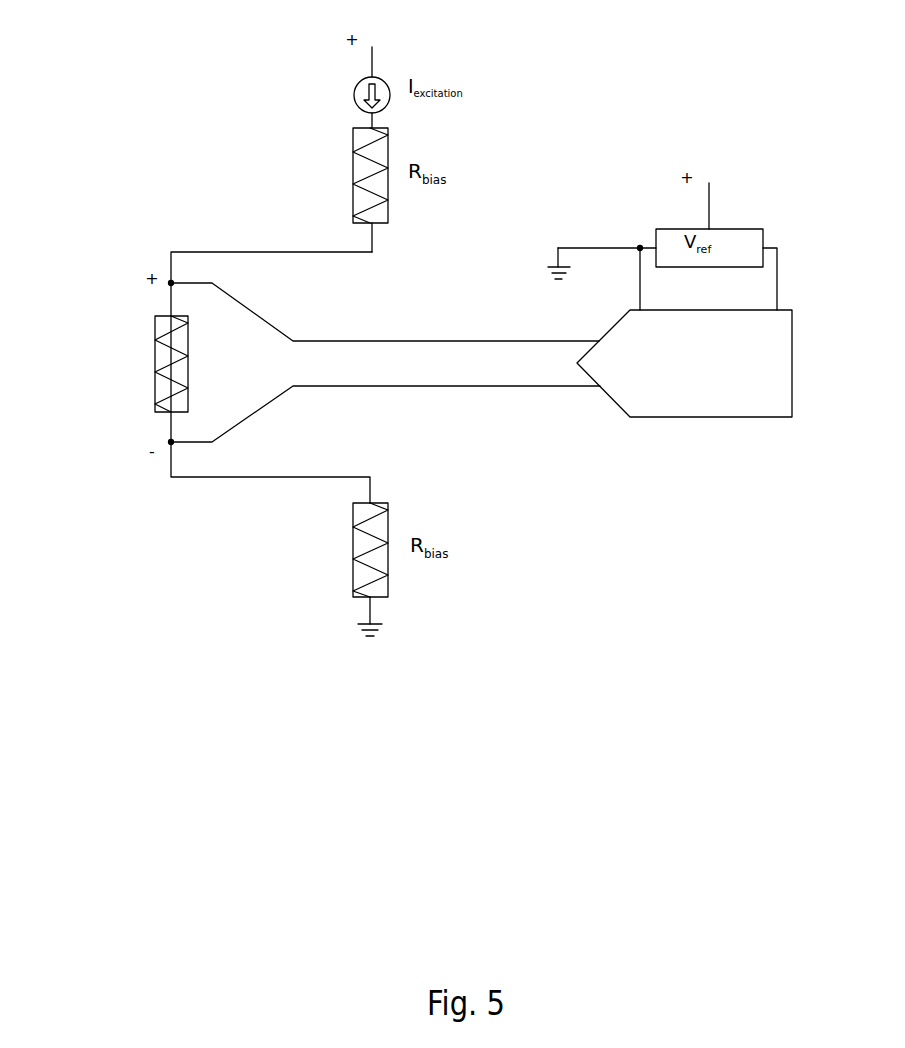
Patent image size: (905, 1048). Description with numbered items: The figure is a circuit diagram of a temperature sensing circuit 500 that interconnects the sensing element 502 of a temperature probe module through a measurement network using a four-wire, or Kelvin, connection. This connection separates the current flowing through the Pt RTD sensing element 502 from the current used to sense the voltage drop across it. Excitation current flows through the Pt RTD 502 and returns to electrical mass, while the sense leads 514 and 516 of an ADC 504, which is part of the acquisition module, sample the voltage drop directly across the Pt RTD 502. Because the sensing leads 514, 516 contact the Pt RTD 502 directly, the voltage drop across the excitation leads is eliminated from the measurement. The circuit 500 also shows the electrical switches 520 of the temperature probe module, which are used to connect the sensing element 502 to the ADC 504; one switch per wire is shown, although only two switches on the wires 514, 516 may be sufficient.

The temperature sensing circuit 500 is at (543, 85).
The sensing element 502 is at (155, 371).
The ADC 504 is at (712, 417).
The sense lead 514 is at (466, 386).
The sense lead 516 is at (448, 341).
The electrical switches 520 is at (188, 283).